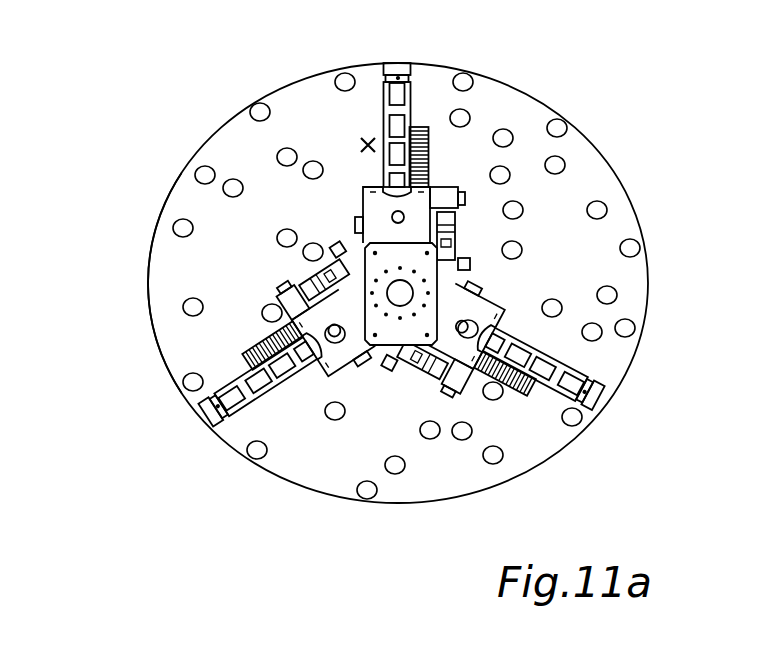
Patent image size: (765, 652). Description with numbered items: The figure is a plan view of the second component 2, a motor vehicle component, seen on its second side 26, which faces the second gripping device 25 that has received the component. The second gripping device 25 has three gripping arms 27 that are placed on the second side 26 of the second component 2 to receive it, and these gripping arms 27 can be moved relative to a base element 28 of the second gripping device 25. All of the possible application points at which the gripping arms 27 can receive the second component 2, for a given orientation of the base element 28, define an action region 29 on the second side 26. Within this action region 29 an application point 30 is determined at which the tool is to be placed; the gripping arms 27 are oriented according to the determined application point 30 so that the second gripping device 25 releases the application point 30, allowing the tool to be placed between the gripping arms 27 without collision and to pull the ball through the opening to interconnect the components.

The second component 2 is at (517, 107).
The second gripping device 25 is at (372, 252).
The second side 26 is at (558, 196).
The gripping arms 27 is at (407, 88).
The base element 28 is at (401, 298).
The action region 29 is at (147, 266).
The application point 30 is at (368, 141).